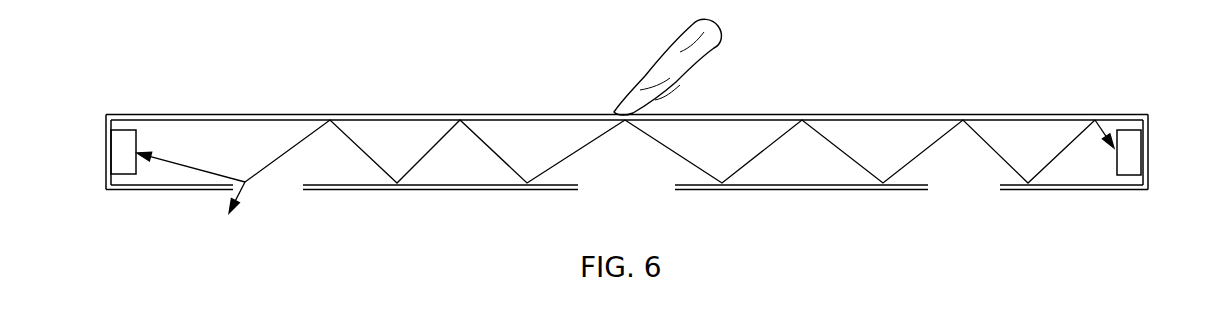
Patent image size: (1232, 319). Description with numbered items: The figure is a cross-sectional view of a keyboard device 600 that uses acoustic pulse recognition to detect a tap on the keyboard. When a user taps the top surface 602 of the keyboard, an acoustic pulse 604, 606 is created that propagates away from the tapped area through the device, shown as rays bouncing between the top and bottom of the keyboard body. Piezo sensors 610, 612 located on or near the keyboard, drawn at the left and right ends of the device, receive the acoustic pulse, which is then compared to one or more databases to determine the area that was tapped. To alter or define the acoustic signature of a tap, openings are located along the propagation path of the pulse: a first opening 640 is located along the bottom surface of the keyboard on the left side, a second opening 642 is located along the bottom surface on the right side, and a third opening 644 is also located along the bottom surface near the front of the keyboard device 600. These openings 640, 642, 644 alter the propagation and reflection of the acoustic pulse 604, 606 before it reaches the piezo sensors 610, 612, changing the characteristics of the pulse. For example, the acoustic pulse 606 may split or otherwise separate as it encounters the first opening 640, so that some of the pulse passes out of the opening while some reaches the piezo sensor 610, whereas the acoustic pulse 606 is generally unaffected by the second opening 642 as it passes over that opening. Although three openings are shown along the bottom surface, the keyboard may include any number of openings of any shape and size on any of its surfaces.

The keyboard device 600 is at (431, 70).
The surface 602 is at (960, 117).
The acoustic pulse 604 is at (862, 168).
The acoustic pulse 606 is at (413, 166).
The piezo sensor 610 is at (125, 150).
The piezo sensor 612 is at (1127, 136).
The first opening 640 is at (268, 187).
The second opening 642 is at (968, 185).
The third opening 644 is at (626, 188).